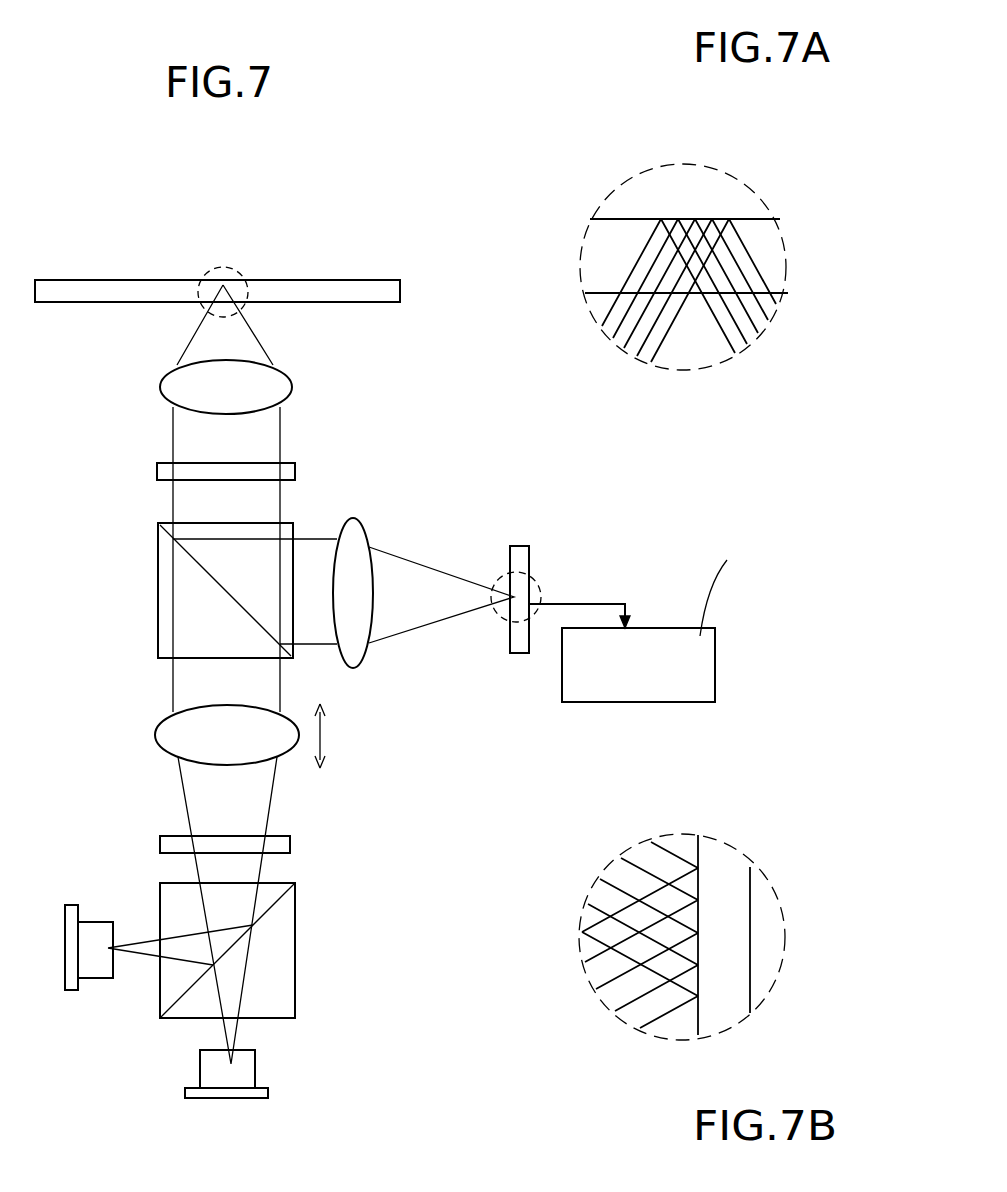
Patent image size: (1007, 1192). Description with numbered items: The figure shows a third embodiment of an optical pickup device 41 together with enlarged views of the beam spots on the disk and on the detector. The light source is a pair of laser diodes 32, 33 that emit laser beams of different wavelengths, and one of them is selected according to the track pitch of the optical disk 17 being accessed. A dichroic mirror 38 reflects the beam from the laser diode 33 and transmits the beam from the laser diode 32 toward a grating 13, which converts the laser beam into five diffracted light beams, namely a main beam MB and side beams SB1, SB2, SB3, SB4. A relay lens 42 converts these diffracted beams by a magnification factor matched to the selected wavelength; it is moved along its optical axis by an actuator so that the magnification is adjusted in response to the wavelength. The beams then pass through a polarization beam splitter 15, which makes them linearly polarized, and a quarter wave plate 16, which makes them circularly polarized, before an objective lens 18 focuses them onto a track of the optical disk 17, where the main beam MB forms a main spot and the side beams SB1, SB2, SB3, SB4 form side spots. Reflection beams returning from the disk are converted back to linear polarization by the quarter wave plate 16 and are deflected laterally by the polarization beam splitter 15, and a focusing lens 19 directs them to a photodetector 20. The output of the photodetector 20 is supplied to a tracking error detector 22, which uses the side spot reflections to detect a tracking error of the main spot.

In FIG. 7, the optical pickup device 41 is at (168, 177).
In FIG. 7, the optical disk 17 is at (155, 281).
In FIG. 7A, the optical disk 17 is at (620, 228).
In FIG. 7, the objective lens 18 is at (165, 380).
In FIG. 7, the quarter wave plate 16 is at (155, 475).
In FIG. 7, the polarization beam splitter 15 is at (157, 575).
In FIG. 7, the focusing lens 19 is at (352, 520).
In FIG. 7, the photodetector 20 is at (522, 545).
In FIG. 7B, the photodetector 20 is at (730, 1026).
In FIG. 7, the tracking error detector 22 is at (666, 628).
In FIG. 7, the relay lens 42 is at (155, 738).
In FIG. 7, the grating 13 is at (158, 845).
In FIG. 7, the dichroic mirror 38 is at (297, 950).
In FIG. 7, the laser diode 33 is at (95, 979).
In FIG. 7, the laser diode 32 is at (250, 1099).
In FIG. 7A, the side beam SB1 is at (664, 217).
In FIG. 7B, the side beam SB1 is at (698, 868).
In FIG. 7A, the side beam SB2 is at (680, 217).
In FIG. 7B, the side beam SB2 is at (698, 900).
In FIG. 7A, the main beam MB is at (697, 217).
In FIG. 7B, the main beam MB is at (698, 933).
In FIG. 7A, the side beam SB3 is at (714, 218).
In FIG. 7B, the side beam SB3 is at (698, 965).
In FIG. 7A, the side beam SB4 is at (735, 219).
In FIG. 7B, the side beam SB4 is at (698, 996).